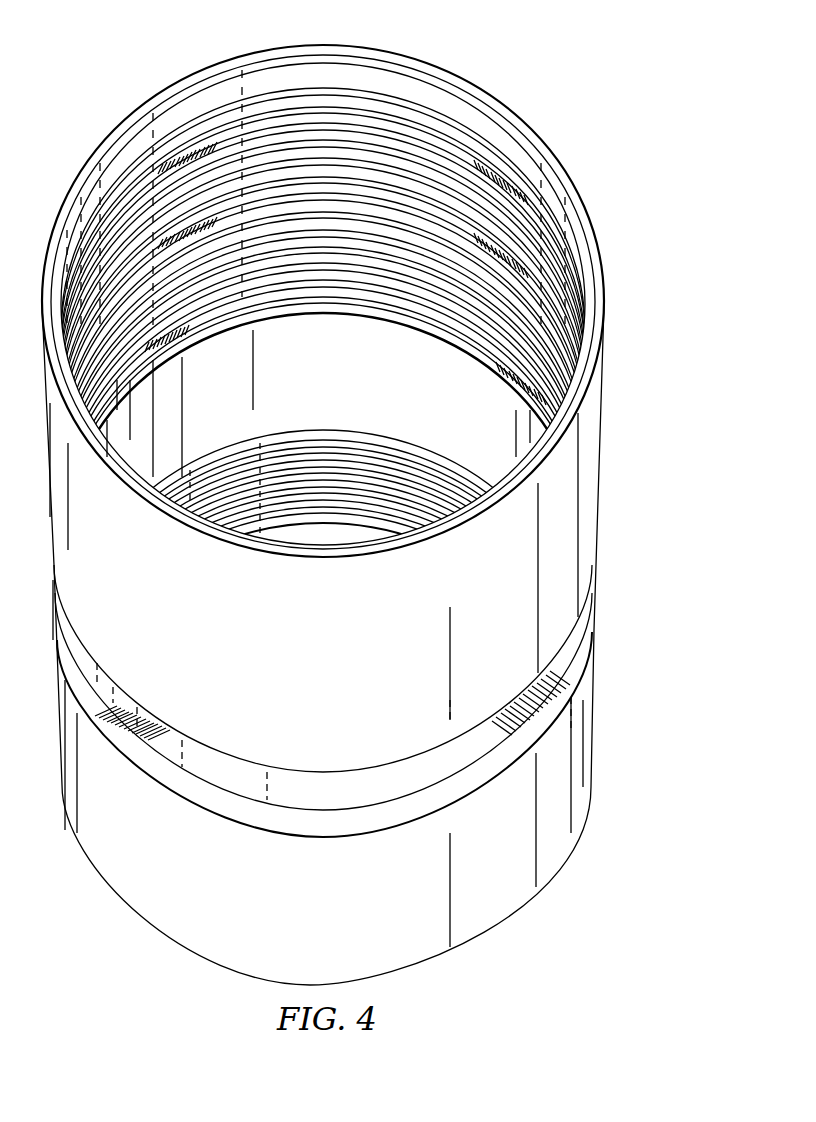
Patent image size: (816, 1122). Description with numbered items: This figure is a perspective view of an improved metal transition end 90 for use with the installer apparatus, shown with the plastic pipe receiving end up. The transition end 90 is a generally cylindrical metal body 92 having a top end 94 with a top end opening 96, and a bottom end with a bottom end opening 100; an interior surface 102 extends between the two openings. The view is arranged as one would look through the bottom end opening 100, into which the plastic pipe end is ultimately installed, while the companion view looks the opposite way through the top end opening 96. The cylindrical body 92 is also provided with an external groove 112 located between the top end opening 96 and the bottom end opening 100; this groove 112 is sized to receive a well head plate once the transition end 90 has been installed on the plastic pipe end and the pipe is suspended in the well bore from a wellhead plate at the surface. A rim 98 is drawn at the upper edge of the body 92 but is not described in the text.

The metal transition end 90 is at (640, 138).
The cylindrical metal body 92 is at (607, 508).
The top end 94 is at (593, 713).
The top end opening 96 is at (497, 944).
The rim 98 is at (601, 430).
The bottom end opening 100 is at (359, 94).
The interior surface 102 is at (451, 377).
The external groove 112 is at (344, 782).